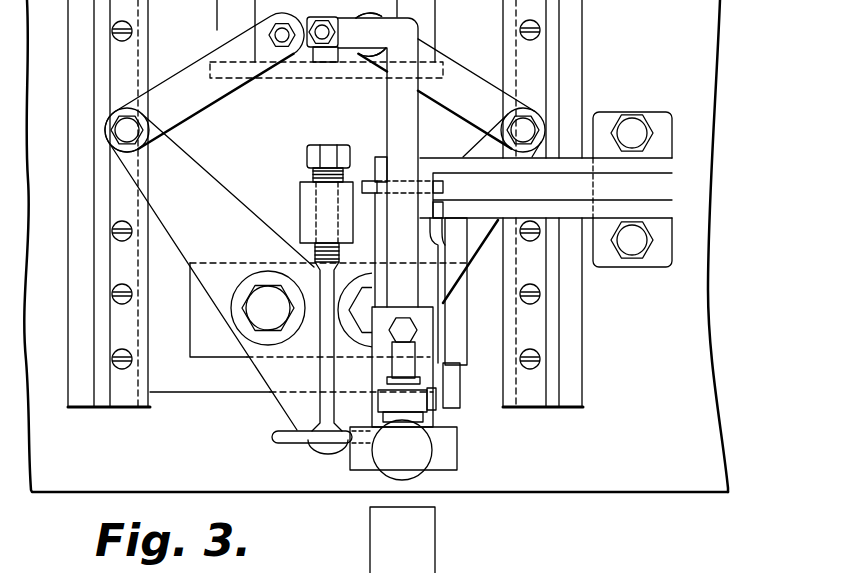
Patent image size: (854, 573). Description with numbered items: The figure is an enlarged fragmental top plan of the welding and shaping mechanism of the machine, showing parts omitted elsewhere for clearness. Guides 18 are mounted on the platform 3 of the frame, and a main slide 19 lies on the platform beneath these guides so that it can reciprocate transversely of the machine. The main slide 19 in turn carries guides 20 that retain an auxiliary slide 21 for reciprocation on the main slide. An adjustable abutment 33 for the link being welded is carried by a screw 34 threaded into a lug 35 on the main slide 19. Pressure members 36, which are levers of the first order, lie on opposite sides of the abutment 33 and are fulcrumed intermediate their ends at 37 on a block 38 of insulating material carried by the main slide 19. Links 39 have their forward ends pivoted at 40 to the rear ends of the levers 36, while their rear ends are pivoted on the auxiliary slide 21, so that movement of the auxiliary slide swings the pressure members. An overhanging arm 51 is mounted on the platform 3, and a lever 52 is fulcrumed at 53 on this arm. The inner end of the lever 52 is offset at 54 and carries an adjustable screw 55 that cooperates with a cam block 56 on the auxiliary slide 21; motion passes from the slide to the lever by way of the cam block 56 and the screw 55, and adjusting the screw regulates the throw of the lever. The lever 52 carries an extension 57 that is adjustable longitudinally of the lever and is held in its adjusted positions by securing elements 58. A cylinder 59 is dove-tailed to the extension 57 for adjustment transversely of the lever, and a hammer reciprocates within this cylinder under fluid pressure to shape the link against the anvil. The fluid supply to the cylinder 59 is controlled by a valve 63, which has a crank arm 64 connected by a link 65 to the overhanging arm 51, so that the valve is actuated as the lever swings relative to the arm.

The platform 3 is at (705, 45).
The guides 18 is at (110, 393).
The main slide 19 is at (208, 383).
The guides 20 is at (228, 23).
The auxiliary slide 21 is at (305, 58).
The adjustable abutment 33 is at (330, 373).
The screw 34 is at (307, 152).
The lug 35 is at (300, 205).
The pressure members 36 is at (213, 203).
The fulcrum 37 is at (264, 298).
The block of insulating material 38 is at (200, 315).
The links 39 is at (190, 103).
The pivot 40 is at (133, 132).
The overhanging arm 51 is at (665, 186).
The lever 52 is at (405, 137).
The fulcrum 53 is at (444, 187).
The offset 54 is at (362, 46).
The screw 55 is at (328, 32).
The cam block 56 is at (329, 62).
The extension 57 is at (379, 364).
The securing elements 58 is at (400, 313).
The cylinder 59 is at (420, 458).
The valve 63 is at (392, 406).
The crank arm 64 is at (397, 347).
The link 65 is at (445, 338).